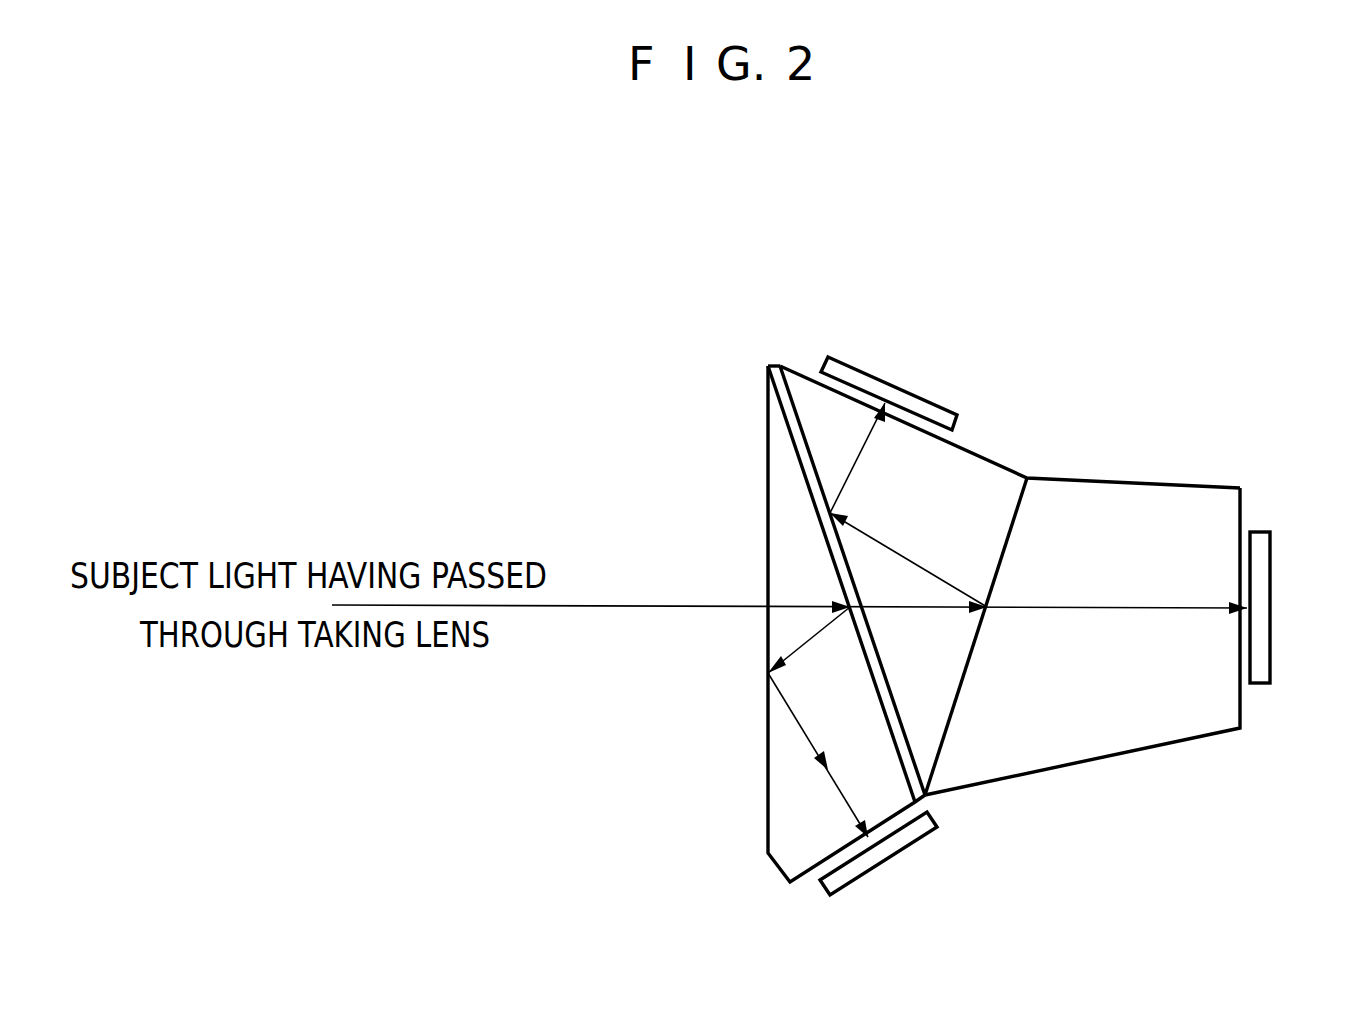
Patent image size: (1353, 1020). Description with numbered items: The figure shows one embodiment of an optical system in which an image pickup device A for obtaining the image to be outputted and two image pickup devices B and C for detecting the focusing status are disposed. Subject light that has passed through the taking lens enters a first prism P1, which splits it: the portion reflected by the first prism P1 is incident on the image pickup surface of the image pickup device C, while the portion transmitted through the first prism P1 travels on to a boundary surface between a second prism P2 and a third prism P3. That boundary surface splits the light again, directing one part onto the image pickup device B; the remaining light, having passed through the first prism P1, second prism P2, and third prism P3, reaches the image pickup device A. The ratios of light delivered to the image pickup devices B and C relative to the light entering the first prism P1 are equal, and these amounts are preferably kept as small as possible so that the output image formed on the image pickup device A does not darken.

The image pickup device A is at (1263, 602).
The image pickup device B is at (908, 405).
The image pickup device C is at (895, 842).
The first prism P1 is at (778, 782).
The second prism P2 is at (963, 487).
The third prism P3 is at (1142, 720).